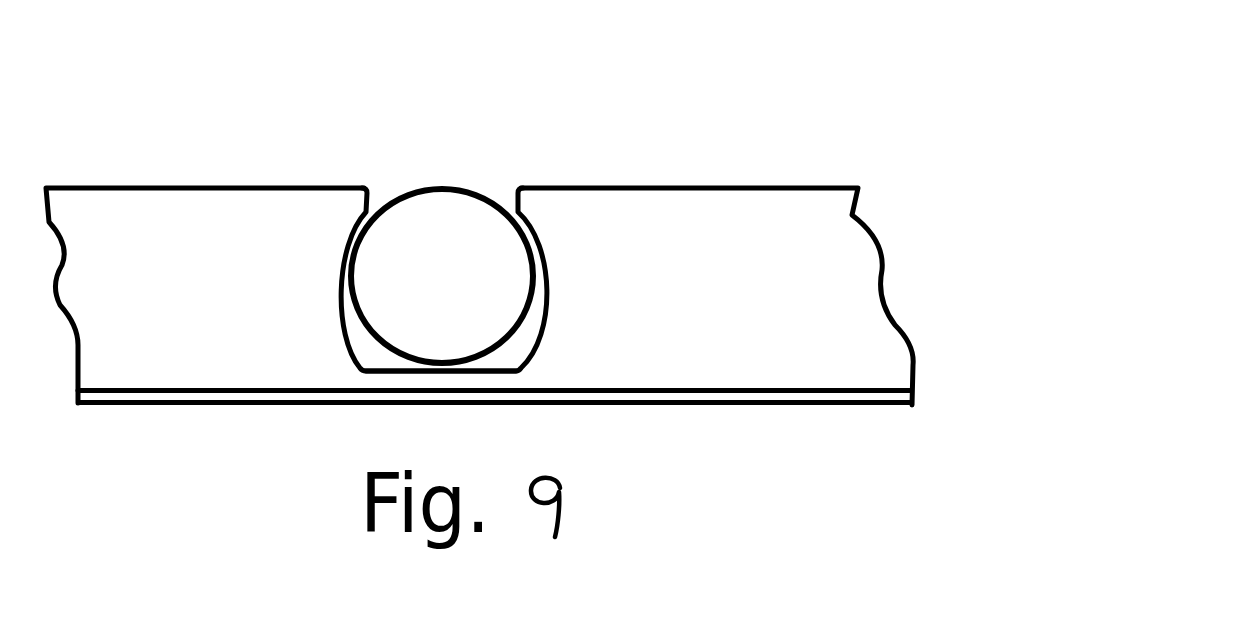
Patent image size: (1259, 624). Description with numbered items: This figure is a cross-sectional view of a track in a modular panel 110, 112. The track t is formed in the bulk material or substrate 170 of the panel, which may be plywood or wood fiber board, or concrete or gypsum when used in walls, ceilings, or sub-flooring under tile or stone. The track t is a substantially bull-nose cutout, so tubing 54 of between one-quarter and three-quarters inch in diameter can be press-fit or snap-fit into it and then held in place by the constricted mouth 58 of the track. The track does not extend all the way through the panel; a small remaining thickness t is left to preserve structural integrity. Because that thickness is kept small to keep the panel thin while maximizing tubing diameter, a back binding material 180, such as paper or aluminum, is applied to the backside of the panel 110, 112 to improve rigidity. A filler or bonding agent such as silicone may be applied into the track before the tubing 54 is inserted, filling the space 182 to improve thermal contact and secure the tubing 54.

The tubing 54 is at (423, 186).
The constricted mouth 58 is at (512, 196).
The modular panel 110 is at (648, 252).
The modular panel 112 is at (648, 252).
The bulk material or substrate 170 is at (772, 250).
The back binding material 180 is at (807, 406).
The space 182 is at (503, 358).
The track t is at (320, 335).